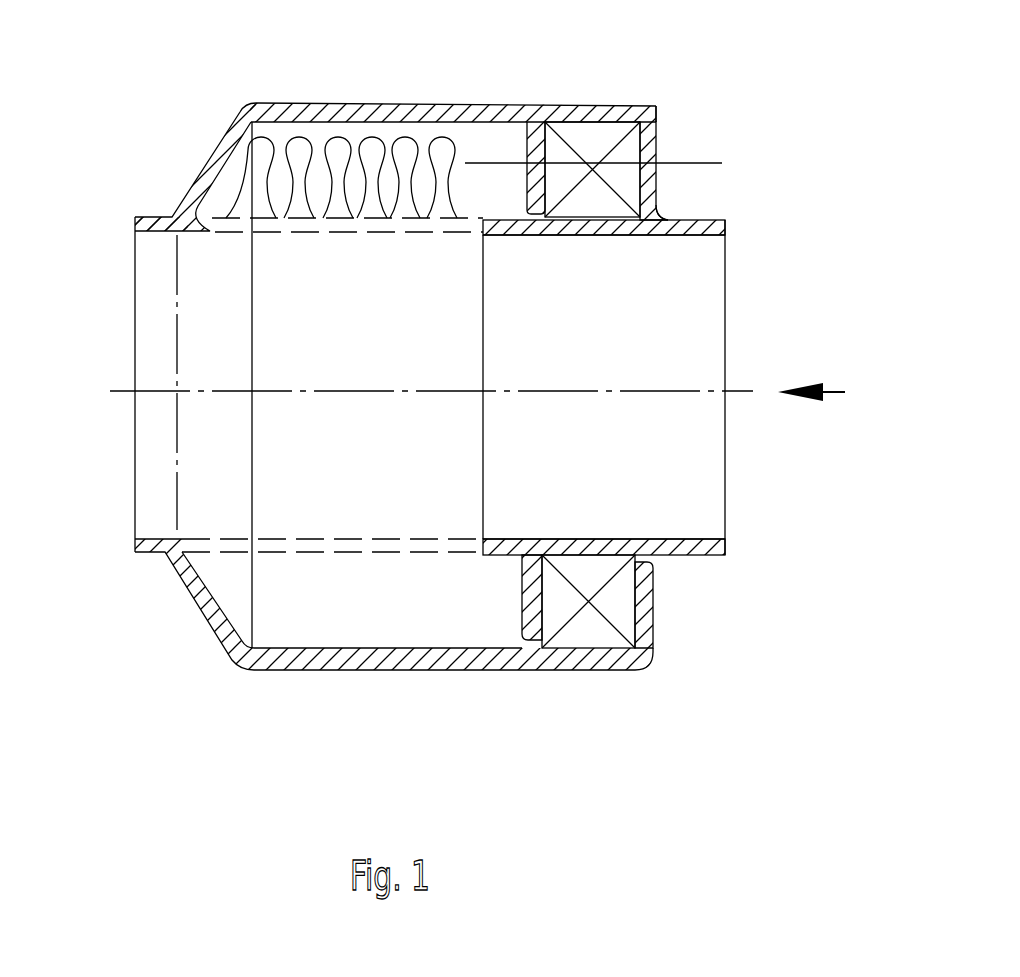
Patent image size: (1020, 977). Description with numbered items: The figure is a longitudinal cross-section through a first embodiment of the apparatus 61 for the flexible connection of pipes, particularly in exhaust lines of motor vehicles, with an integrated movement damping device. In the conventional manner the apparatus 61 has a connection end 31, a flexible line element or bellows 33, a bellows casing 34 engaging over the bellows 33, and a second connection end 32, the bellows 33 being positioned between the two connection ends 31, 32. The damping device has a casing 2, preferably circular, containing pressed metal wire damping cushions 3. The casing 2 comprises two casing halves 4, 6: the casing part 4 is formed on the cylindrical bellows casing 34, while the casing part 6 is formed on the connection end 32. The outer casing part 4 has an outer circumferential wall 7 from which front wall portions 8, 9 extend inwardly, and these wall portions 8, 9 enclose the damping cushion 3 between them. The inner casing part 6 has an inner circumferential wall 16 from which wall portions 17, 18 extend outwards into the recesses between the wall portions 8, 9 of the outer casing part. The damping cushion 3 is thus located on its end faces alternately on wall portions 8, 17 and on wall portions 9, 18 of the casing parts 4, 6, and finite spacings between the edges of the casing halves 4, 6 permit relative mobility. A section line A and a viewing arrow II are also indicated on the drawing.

The casing 2 is at (709, 122).
The damping cushion 3 is at (607, 143).
The casing part 4 is at (622, 92).
The casing part 6 is at (585, 248).
The outer circumferential wall 7 is at (573, 105).
The front wall portion 8 is at (645, 590).
The front wall portion 9 is at (536, 185).
The inner circumferential wall 16 is at (557, 233).
The wall portion 17 is at (528, 605).
The wall portion 18 is at (648, 176).
The connection end 31 is at (150, 217).
The connection end 32 is at (700, 242).
The bellows 33 is at (280, 220).
The bellows casing 34 is at (315, 105).
The apparatus 61 is at (180, 152).
The section line A is at (487, 163).
The view direction II is at (828, 395).